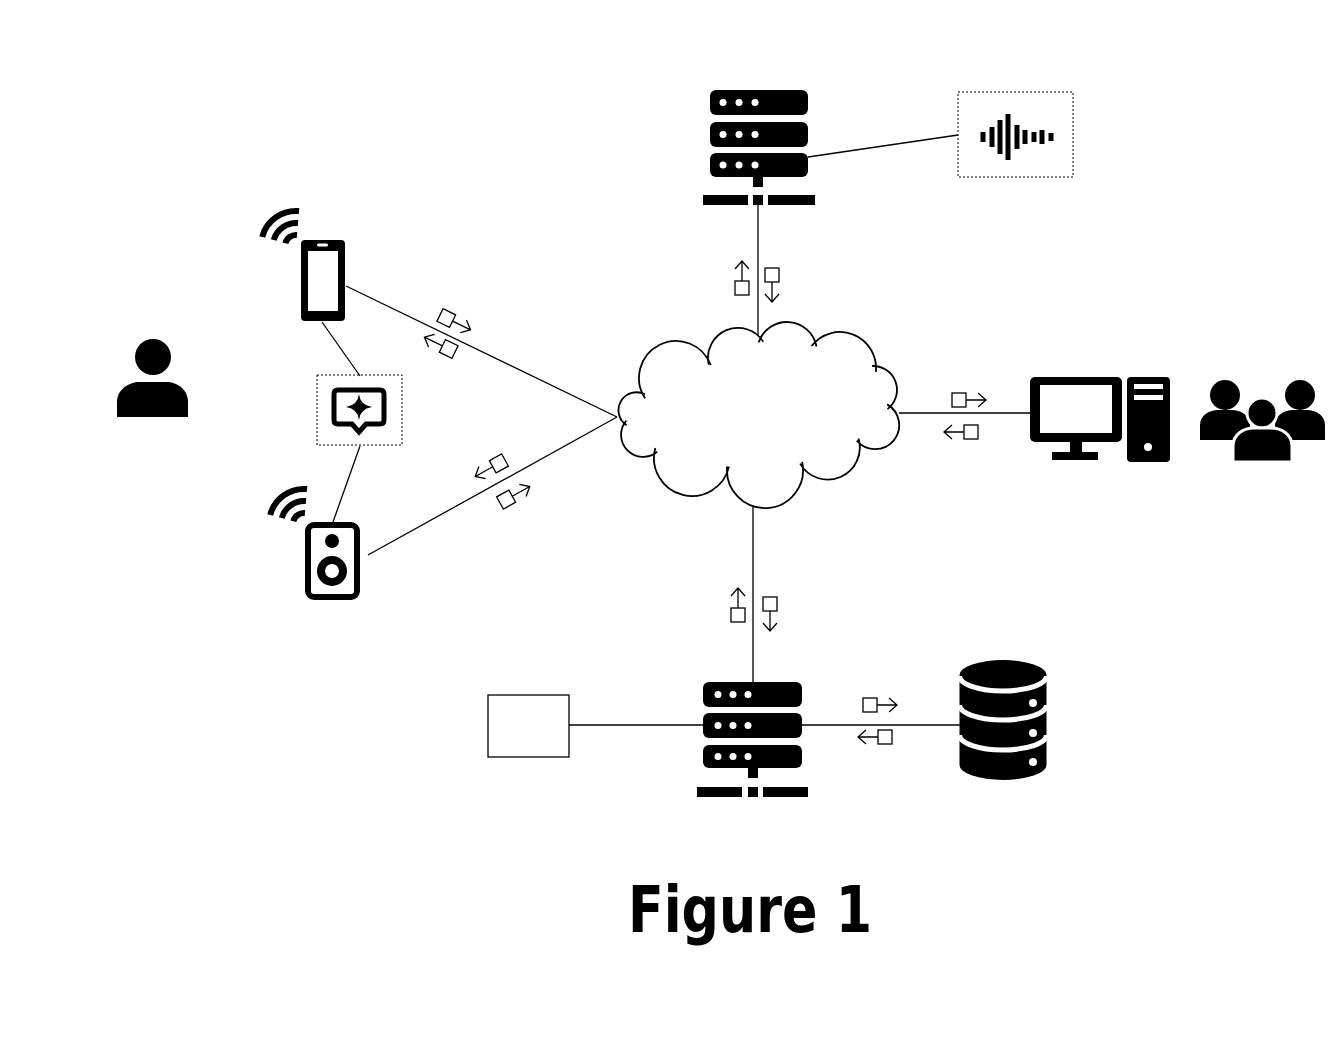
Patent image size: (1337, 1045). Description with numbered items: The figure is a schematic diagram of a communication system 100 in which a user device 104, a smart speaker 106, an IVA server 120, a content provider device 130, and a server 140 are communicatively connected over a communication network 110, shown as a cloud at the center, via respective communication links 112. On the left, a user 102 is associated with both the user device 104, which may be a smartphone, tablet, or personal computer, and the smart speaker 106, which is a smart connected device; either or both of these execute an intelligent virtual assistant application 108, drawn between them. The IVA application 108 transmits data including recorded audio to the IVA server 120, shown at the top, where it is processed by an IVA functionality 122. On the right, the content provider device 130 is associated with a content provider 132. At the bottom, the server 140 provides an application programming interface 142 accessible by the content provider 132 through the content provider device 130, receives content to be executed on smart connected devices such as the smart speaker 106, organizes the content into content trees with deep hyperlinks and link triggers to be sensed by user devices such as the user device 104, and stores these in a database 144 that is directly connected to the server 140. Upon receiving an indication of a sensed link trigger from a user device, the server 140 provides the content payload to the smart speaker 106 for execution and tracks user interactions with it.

The communication system 100 is at (150, 71).
The user 102 is at (152, 320).
The user device 104 is at (326, 217).
The smart speaker 106 is at (334, 610).
The IVA application 108 is at (384, 448).
The communication network 110 is at (773, 429).
The communication links 112 is at (561, 388).
The IVA server 120 is at (809, 137).
The IVA functionality 122 is at (1020, 92).
The content provider devices 130 is at (1114, 345).
The content provider 132 is at (1258, 345).
The server 140 is at (802, 655).
The application programming interface 142 is at (523, 695).
The database 144 is at (1010, 625).